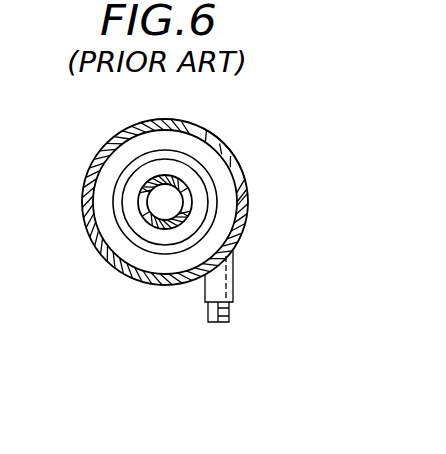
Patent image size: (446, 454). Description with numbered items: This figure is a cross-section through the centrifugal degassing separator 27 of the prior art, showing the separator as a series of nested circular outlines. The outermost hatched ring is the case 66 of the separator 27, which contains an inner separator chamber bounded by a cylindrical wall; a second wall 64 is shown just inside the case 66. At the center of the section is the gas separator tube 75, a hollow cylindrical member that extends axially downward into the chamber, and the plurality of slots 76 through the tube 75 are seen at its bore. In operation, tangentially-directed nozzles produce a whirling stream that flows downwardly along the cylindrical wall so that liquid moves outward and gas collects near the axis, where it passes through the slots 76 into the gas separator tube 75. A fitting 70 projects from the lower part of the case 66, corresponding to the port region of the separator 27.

The centrifugal degassing separator 27 is at (230, 150).
The inner wall 64 is at (193, 135).
The case 66 is at (142, 128).
The connector stem 70 is at (230, 310).
The gas separator tube 75 is at (153, 207).
The slots 76 is at (183, 199).